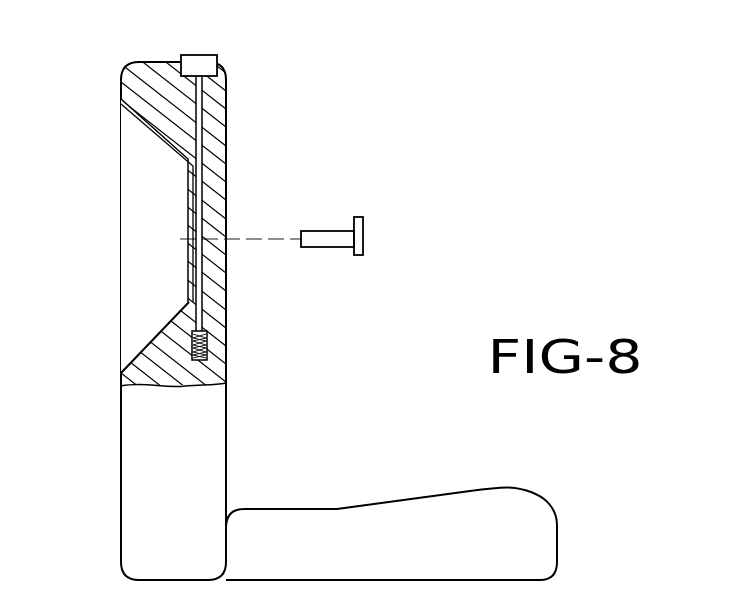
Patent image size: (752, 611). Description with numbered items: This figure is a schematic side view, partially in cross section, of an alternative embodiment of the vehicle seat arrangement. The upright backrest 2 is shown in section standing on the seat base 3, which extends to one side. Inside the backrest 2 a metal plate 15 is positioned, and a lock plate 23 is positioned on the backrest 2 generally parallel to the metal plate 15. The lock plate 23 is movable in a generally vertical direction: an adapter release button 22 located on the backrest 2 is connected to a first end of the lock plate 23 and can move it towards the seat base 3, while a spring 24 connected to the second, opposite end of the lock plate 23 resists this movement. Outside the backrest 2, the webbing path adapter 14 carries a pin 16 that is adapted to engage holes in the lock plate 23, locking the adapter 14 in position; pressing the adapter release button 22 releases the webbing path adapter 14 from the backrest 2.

The backrest 2 is at (138, 415).
The seat base 3 is at (403, 514).
The webbing path adapter 14 is at (360, 226).
The metal plate 15 is at (170, 150).
The pin 16 is at (323, 239).
The adapter release button 22 is at (200, 62).
The lock plate 23 is at (202, 137).
The spring 24 is at (203, 347).